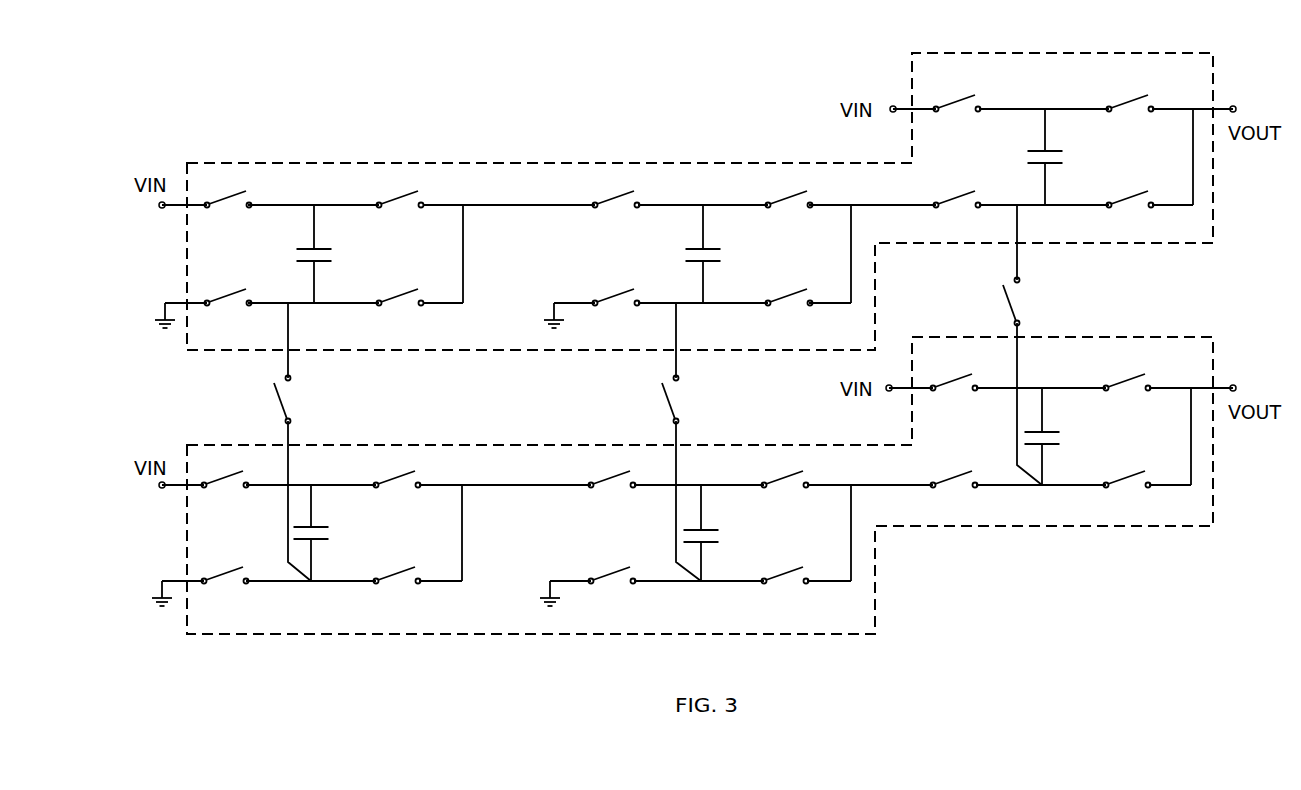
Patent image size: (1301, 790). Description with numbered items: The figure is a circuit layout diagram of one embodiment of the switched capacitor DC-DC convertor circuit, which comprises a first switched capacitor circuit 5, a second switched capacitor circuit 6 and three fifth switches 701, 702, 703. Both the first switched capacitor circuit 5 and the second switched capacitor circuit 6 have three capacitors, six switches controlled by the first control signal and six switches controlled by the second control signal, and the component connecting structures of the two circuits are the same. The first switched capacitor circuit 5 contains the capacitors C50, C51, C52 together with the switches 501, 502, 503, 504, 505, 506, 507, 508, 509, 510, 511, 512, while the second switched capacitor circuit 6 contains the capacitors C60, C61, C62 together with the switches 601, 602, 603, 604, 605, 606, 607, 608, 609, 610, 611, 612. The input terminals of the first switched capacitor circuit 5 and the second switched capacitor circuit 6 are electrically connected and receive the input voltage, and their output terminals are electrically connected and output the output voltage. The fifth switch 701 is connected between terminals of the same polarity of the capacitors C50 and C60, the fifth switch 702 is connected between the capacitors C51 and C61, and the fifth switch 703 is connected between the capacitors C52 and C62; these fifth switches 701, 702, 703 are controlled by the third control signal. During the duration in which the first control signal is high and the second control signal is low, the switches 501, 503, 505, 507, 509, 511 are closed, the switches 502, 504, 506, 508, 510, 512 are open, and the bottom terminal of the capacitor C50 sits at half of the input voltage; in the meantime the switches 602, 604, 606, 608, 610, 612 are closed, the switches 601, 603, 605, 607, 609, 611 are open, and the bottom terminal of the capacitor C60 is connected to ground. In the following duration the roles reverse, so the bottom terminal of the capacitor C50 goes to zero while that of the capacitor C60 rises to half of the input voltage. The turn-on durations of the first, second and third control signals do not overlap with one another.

The first switched capacitor circuit 5 is at (572, 162).
The second switched capacitor circuit 6 is at (467, 444).
The switch 501 is at (228, 202).
The switch 502 is at (228, 300).
The switch 503 is at (400, 300).
The switch 504 is at (400, 202).
The switch 505 is at (616, 203).
The switch 506 is at (616, 301).
The switch 507 is at (789, 301).
The switch 508 is at (789, 203).
The switch 509 is at (957, 107).
The switch 510 is at (957, 203).
The switch 511 is at (1130, 203).
The switch 512 is at (1130, 107).
The switch 601 is at (225, 483).
The switch 602 is at (225, 579).
The switch 603 is at (397, 579).
The switch 604 is at (397, 483).
The switch 605 is at (612, 483).
The switch 606 is at (612, 579).
The switch 607 is at (785, 579).
The switch 608 is at (785, 483).
The switch 609 is at (954, 386).
The switch 610 is at (954, 483).
The switch 611 is at (1127, 483).
The switch 612 is at (1127, 386).
The fifth switch 701 is at (295, 400).
The fifth switch 702 is at (685, 400).
The fifth switch 703 is at (1023, 302).
The capacitor C50 is at (337, 254).
The capacitor C51 is at (725, 254).
The capacitor C52 is at (1068, 157).
The capacitor C60 is at (332, 533).
The capacitor C61 is at (720, 533).
The capacitor C62 is at (1064, 436).